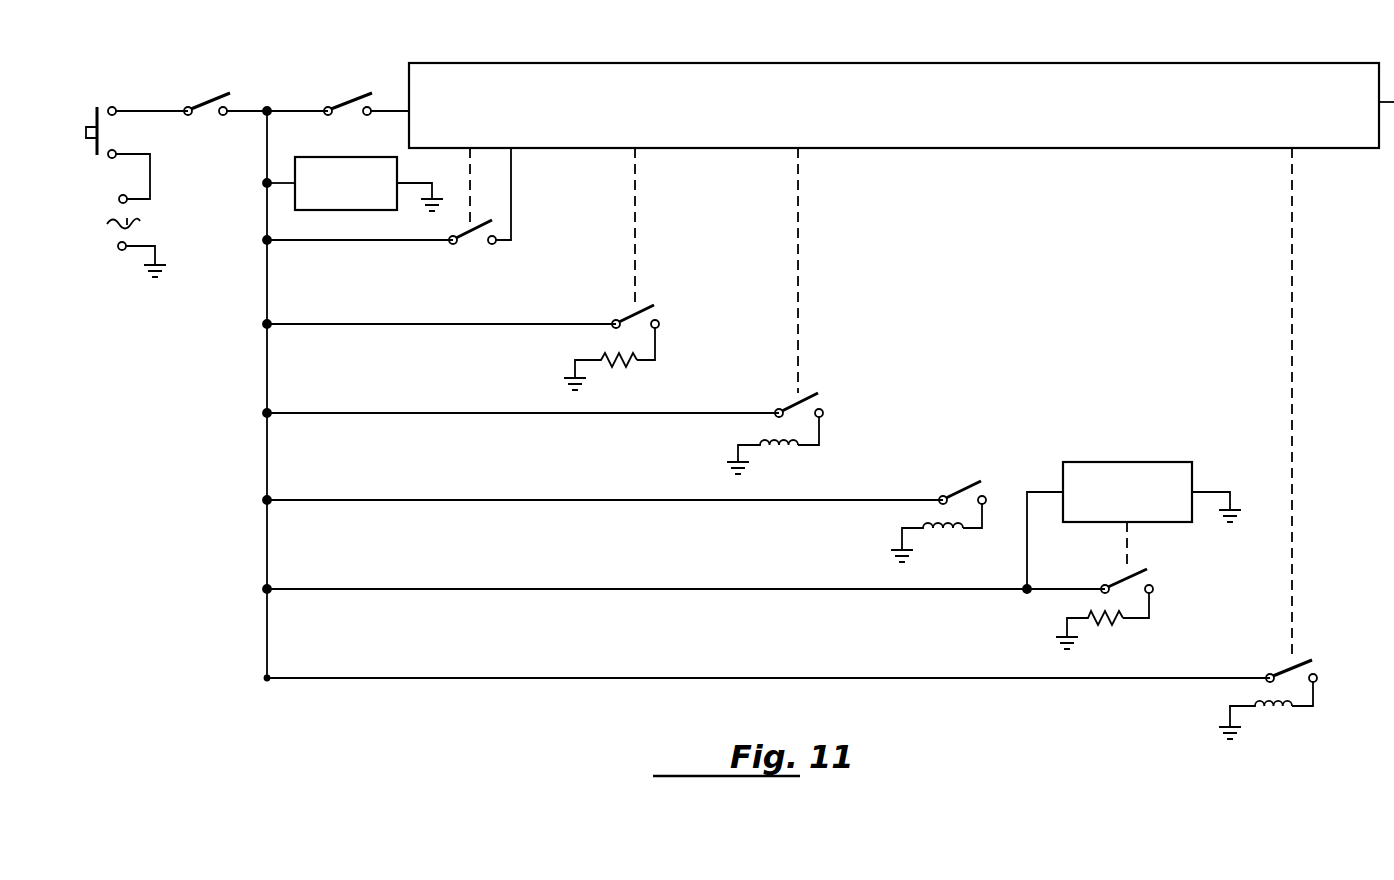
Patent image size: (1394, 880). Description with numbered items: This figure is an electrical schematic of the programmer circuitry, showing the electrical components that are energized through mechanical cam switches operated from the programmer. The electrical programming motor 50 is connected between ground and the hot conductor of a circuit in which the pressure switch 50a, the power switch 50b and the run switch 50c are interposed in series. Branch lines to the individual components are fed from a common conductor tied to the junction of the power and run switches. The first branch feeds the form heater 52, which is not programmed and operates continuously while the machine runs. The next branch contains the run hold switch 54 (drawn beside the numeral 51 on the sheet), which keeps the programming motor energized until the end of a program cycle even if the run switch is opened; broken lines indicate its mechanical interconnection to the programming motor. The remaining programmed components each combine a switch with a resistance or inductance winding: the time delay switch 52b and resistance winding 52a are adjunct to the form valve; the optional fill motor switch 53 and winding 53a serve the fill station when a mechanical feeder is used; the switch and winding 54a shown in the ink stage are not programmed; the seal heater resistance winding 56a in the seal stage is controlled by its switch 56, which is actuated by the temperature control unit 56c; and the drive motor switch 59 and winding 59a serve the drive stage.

The programming motor 50 is at (635, 80).
The pressure switch 50a is at (92, 115).
The power switch 50b is at (205, 99).
The run switch 50c is at (347, 105).
The run hold switch 51 is at (460, 248).
The form heater 52 is at (332, 157).
The resistance winding 52a is at (600, 355).
The time delay switch 52b is at (663, 310).
The fill motor switch 53 is at (822, 400).
The fill motor winding 53a is at (762, 443).
The run hold switch 54 is at (984, 486).
The ink motor 54a is at (925, 527).
The seal heater switch 56 is at (1152, 575).
The seal heater resistance winding 56a is at (1090, 614).
The temperature control unit 56c is at (1080, 470).
The drive motor switch 59 is at (1315, 664).
The drive motor winding 59a is at (1258, 706).